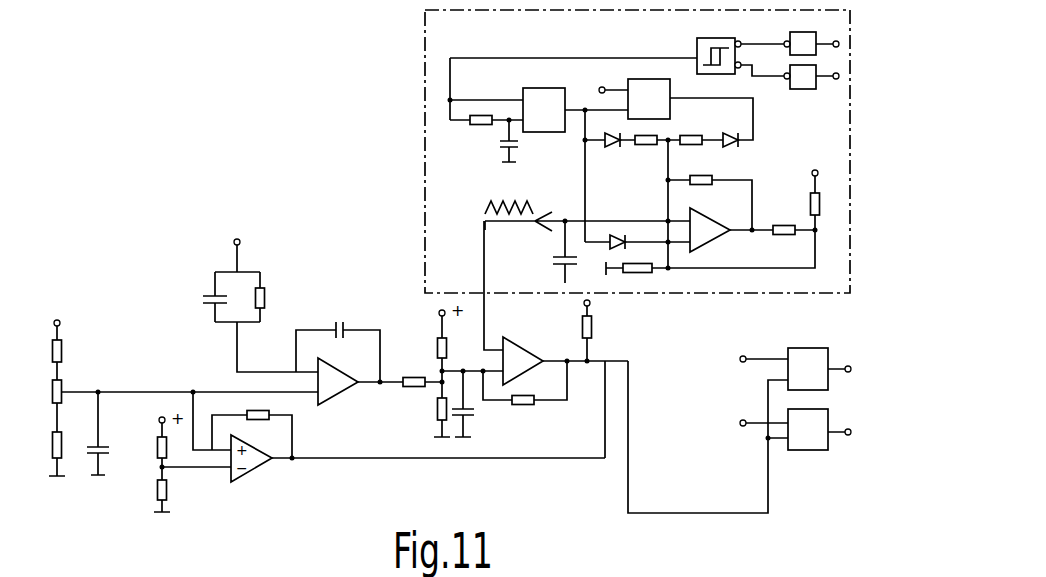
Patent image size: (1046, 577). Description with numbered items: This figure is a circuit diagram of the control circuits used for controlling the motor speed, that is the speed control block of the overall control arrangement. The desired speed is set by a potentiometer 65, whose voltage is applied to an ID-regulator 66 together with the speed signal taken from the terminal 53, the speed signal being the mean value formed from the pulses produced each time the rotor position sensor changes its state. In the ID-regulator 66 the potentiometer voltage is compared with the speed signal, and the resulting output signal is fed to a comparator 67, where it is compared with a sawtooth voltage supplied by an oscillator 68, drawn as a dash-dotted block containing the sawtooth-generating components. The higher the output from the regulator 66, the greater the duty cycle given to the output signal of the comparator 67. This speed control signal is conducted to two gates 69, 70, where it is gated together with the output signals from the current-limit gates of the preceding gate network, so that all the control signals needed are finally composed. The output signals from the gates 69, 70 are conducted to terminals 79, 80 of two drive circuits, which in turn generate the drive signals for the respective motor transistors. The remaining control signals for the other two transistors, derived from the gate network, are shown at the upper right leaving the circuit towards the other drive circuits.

The terminal 53 is at (240, 238).
The potentiometer 65 is at (63, 386).
The ID-regulator 66 is at (347, 392).
The comparator 67 is at (518, 341).
The oscillator 68 is at (668, 296).
The gate 69 is at (808, 348).
The gate 70 is at (815, 450).
The terminal 79 is at (850, 366).
The terminal 80 is at (849, 435).